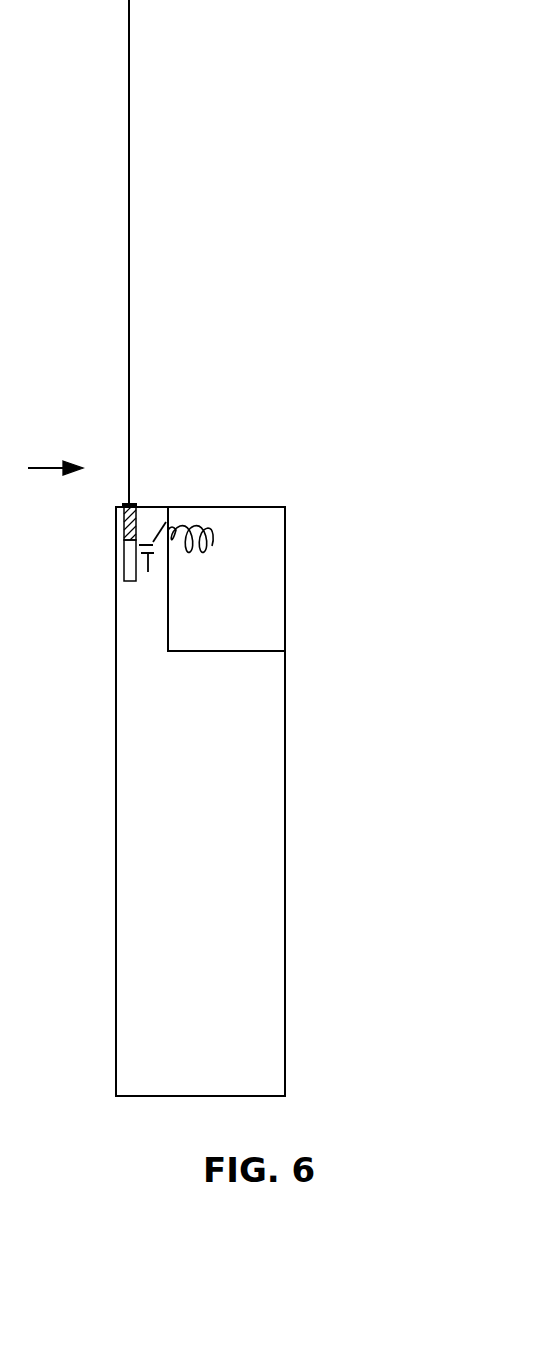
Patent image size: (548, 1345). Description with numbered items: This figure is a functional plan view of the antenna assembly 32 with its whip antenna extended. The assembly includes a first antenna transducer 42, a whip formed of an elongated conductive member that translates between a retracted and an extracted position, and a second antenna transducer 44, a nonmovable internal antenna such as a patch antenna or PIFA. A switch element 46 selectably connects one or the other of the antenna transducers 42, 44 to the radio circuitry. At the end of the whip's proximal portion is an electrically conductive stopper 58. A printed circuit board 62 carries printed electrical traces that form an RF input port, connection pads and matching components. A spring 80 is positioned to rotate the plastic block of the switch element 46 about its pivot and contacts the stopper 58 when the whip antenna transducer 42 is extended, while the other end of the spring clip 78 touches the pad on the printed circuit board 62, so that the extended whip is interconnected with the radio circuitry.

The antenna assembly 32 is at (449, 114).
The first antenna transducer 42 is at (131, 163).
The second antenna transducer 44 is at (287, 529).
The switch element 46 is at (168, 522).
The stopper 58 is at (138, 502).
The printed circuit board 62 is at (286, 811).
The spring clip 78 is at (119, 562).
The spring 80 is at (212, 543).